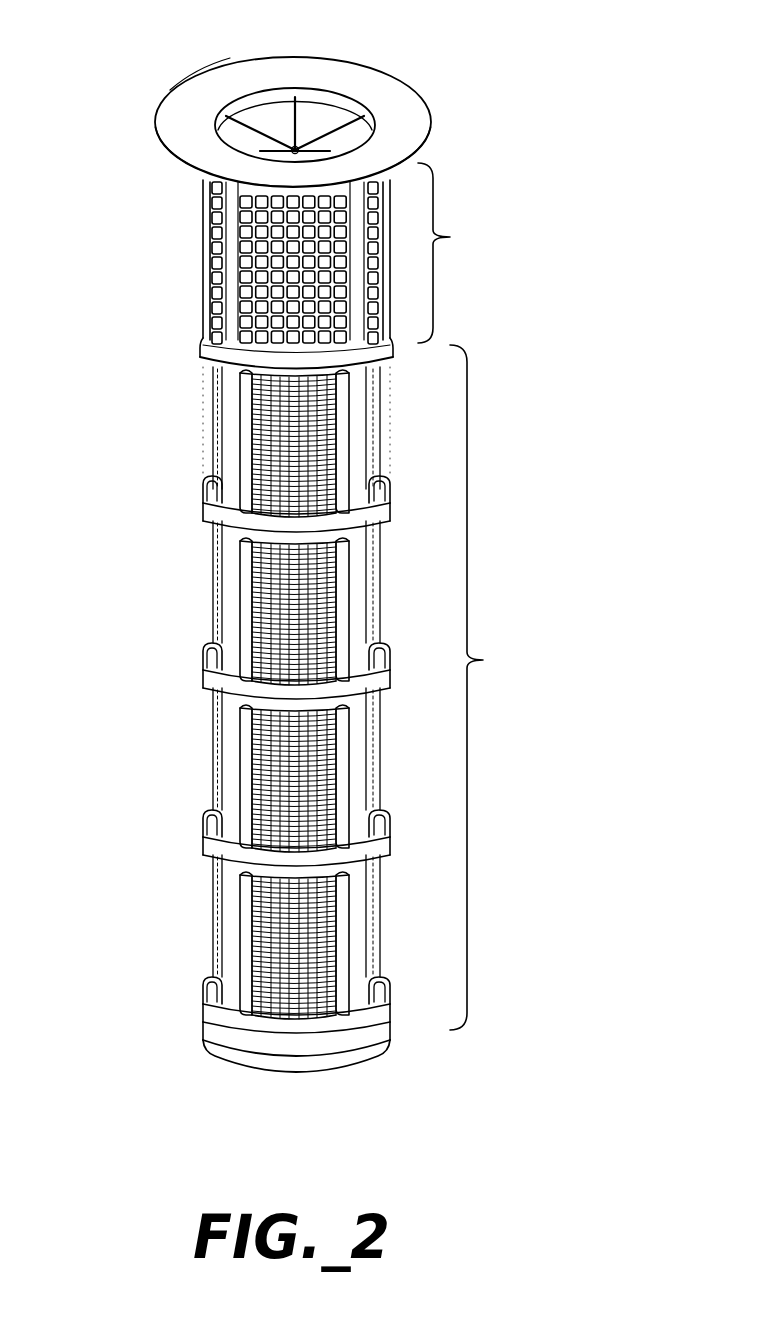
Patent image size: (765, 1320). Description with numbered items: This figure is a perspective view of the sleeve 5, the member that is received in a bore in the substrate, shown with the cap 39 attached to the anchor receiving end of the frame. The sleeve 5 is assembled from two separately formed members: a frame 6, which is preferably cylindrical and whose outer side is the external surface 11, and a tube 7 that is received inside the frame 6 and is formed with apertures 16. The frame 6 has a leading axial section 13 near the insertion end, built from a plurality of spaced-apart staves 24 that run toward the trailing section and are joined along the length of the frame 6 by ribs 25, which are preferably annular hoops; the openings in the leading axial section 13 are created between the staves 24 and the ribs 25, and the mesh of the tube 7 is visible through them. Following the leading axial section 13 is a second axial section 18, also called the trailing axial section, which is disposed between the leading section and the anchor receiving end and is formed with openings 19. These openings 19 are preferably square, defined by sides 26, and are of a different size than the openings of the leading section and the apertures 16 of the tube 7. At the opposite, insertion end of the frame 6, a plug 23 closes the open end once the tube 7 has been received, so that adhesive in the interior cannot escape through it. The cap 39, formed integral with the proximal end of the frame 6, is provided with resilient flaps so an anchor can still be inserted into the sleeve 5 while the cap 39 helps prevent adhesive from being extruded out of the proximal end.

The cap 39 is at (301, 73).
The external surface 11 is at (360, 190).
The openings 19 is at (245, 218).
The frame 6 is at (226, 262).
The second axial section 18 is at (458, 253).
The sleeve 5 is at (442, 334).
The sides 26 is at (262, 345).
The ribs 25 is at (205, 346).
The apertures 16 is at (270, 610).
The tube 7 is at (388, 566).
The staves 24 is at (363, 731).
The leading axial section 13 is at (493, 687).
The plug 23 is at (258, 1068).